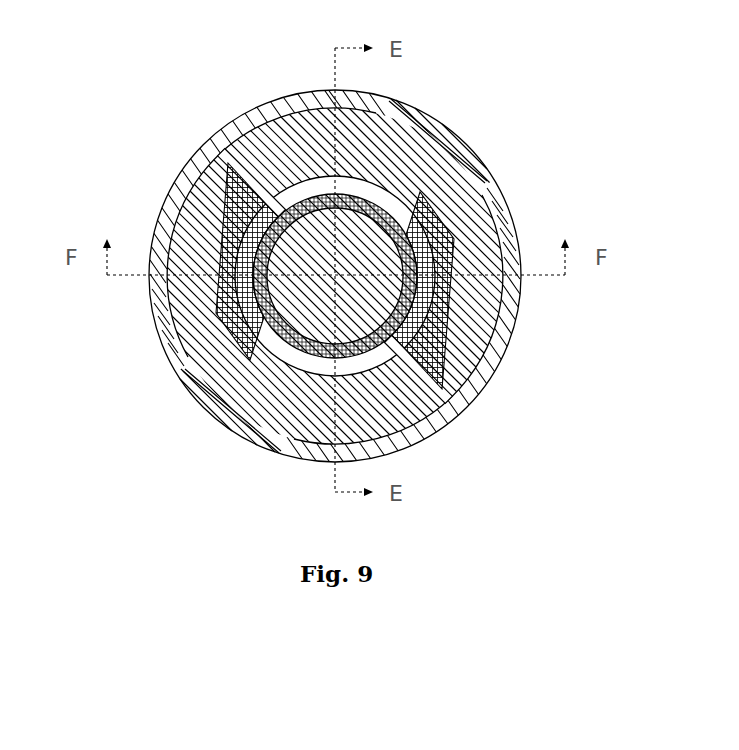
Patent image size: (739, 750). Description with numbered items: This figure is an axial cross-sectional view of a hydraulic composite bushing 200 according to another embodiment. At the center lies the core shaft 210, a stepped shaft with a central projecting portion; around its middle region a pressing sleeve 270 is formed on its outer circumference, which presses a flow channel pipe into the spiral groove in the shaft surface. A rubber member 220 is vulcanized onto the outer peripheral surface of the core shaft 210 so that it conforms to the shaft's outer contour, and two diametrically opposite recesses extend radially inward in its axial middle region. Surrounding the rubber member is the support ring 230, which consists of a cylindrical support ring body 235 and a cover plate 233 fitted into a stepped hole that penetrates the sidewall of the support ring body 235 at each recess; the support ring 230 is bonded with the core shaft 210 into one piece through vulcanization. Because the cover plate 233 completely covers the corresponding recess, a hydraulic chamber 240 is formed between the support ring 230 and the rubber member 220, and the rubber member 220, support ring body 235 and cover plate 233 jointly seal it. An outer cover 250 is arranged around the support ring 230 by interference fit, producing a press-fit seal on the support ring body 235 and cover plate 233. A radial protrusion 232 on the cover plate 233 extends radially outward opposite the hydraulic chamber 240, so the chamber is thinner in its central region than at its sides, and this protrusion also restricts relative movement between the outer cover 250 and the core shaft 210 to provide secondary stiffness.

The hydraulic composite bushing 200 is at (80, 23).
The core shaft 210 is at (483, 157).
The rubber member 220 is at (222, 205).
The support ring 230 is at (212, 375).
The radial protrusion 232 is at (415, 113).
The cover plate 233 is at (242, 434).
The support ring body 235 is at (456, 330).
The hydraulic chamber 240 is at (307, 190).
The outer cover 250 is at (158, 335).
The pressing sleeve 270 is at (453, 420).